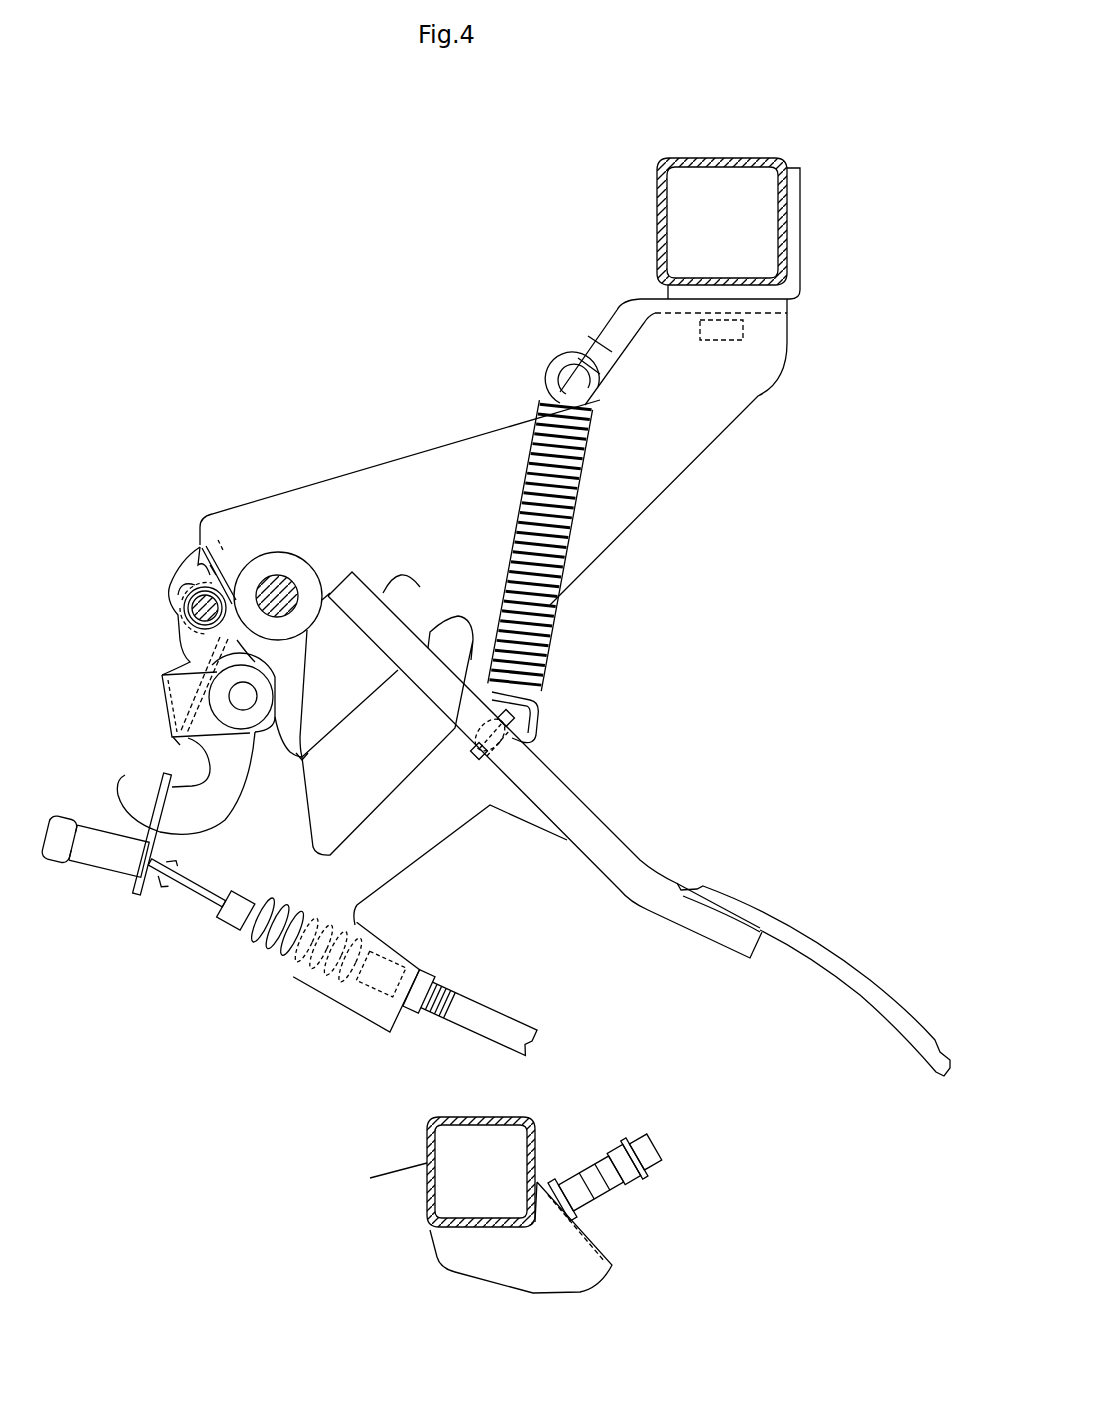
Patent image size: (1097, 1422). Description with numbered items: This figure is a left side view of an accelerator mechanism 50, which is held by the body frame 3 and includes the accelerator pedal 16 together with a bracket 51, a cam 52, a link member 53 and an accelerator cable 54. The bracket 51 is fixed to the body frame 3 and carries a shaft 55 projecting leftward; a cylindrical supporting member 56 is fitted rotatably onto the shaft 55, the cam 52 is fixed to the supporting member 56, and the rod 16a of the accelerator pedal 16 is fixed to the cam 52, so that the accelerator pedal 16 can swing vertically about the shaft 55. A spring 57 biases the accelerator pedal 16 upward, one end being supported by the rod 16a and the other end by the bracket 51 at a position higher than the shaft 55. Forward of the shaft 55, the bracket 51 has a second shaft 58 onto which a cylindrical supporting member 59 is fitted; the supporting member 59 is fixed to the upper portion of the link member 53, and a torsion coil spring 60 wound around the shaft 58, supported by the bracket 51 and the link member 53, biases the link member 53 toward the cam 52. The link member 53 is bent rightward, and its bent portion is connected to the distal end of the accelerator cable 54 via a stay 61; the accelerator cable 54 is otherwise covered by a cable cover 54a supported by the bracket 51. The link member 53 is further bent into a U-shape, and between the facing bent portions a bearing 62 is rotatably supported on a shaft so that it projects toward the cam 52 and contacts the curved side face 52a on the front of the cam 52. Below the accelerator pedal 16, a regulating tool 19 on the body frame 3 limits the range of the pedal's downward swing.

The body frame 3 is at (705, 158).
The accelerator pedal 16 is at (800, 932).
The rod 16a is at (560, 845).
The regulating tool 19 is at (648, 1165).
The accelerator mechanism 50 is at (702, 622).
The bracket 51 is at (362, 483).
The cam 52 is at (345, 715).
The side face 52a is at (303, 770).
The link member 53 is at (160, 707).
The accelerator cable 54 is at (193, 895).
The cable cover 54a is at (495, 1027).
The shaft 55 is at (273, 596).
The supporting member 56 is at (245, 567).
The spring 57 is at (573, 530).
The shaft 58 is at (200, 610).
The supporting member 59 is at (180, 592).
The torsion coil spring 60 is at (200, 560).
The stay 61 is at (153, 827).
The bearing 62 is at (247, 737).